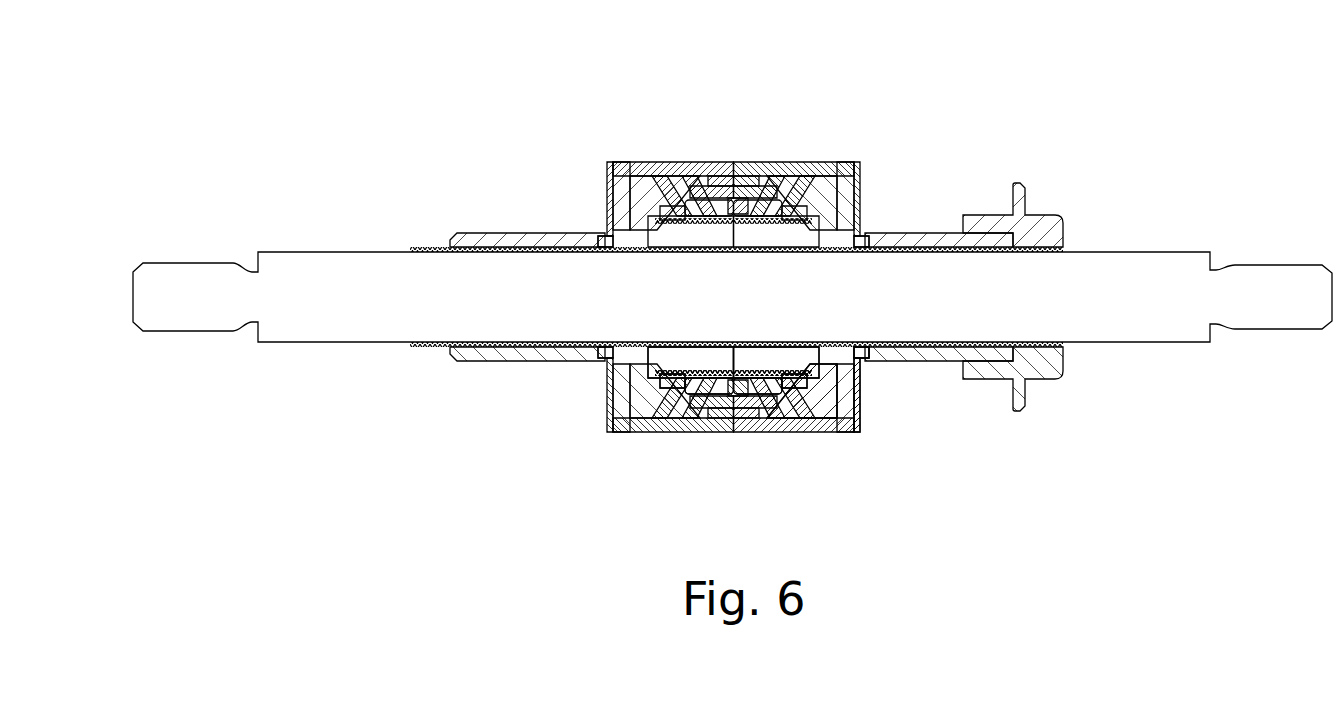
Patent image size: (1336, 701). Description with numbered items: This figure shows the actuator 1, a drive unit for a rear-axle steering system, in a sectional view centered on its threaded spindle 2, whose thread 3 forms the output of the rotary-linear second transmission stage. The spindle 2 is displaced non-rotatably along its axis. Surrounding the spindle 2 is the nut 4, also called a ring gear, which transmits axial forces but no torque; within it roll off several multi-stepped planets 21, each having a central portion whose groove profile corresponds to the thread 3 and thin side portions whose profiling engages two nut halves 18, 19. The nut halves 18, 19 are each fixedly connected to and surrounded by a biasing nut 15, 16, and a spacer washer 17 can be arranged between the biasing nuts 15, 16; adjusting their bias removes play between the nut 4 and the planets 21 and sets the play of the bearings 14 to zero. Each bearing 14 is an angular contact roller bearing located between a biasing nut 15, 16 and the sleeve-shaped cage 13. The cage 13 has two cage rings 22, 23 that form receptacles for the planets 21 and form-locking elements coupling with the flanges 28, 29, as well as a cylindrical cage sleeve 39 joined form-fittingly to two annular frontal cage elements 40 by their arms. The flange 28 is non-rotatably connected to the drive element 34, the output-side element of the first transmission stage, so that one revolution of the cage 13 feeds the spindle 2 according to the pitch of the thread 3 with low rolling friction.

The actuator 1 is at (1012, 112).
The threaded spindle 2 is at (314, 248).
The thread 3 is at (409, 353).
The nut 4 is at (728, 372).
The cage 13 is at (624, 373).
The bearing 14 is at (632, 186).
The biasing nut 15 is at (764, 169).
The biasing nut 16 is at (695, 175).
The spacer washer 17 is at (742, 434).
The nut half 18 is at (777, 434).
The nut half 19 is at (672, 432).
The planet 21 is at (838, 395).
The cage ring 22 is at (849, 365).
The cage ring 23 is at (631, 361).
The flange 28 is at (884, 231).
The flange 29 is at (525, 230).
The drive element 34 is at (1041, 212).
The cage sleeve 39 is at (655, 158).
The frontal cage element 40 is at (620, 436).